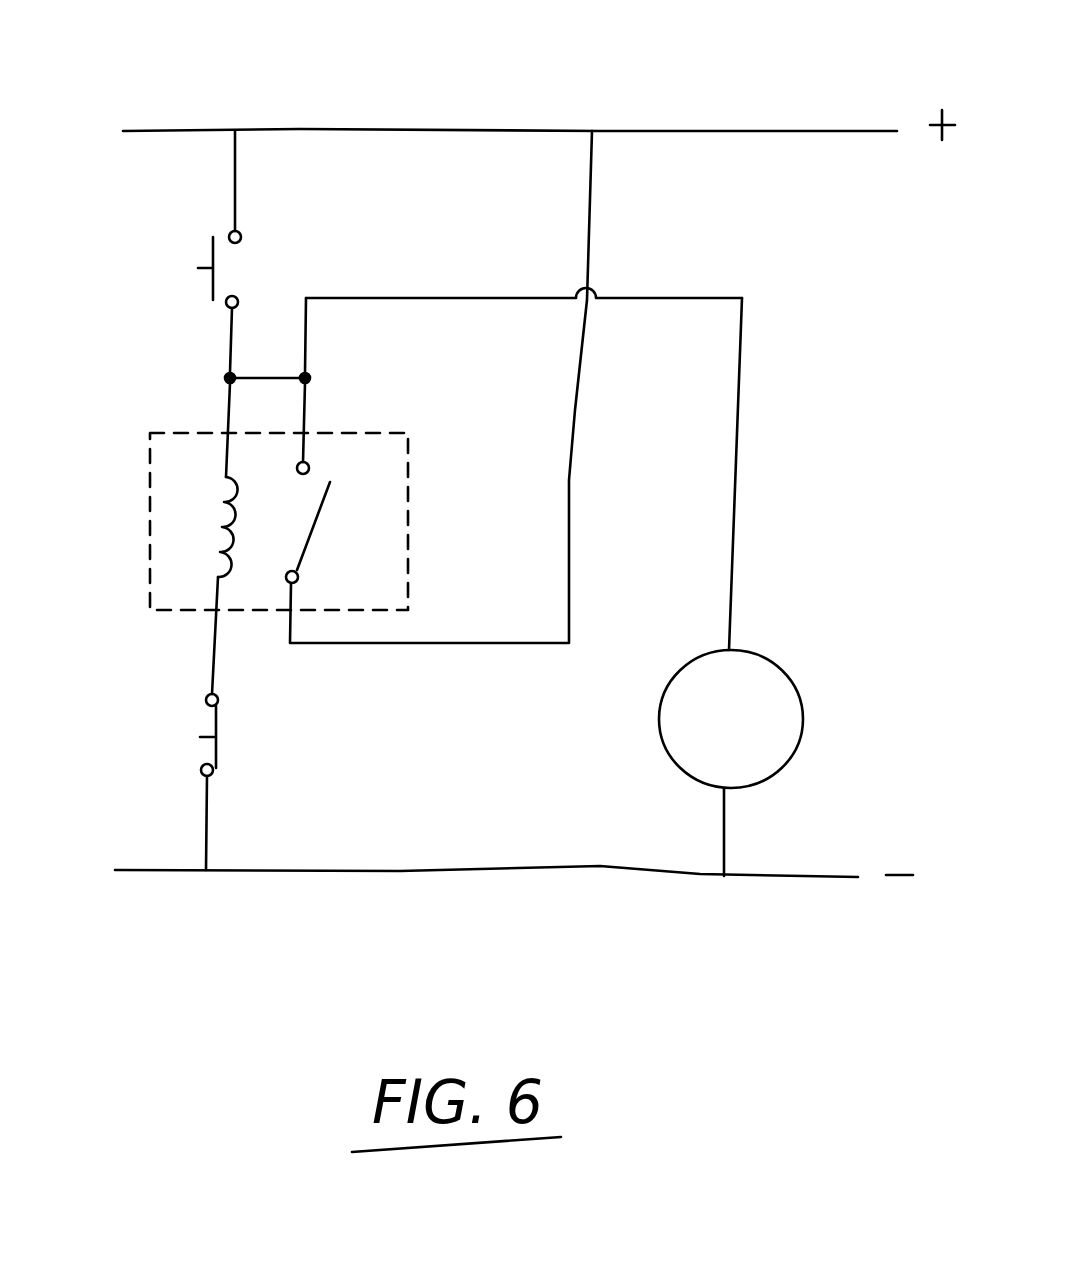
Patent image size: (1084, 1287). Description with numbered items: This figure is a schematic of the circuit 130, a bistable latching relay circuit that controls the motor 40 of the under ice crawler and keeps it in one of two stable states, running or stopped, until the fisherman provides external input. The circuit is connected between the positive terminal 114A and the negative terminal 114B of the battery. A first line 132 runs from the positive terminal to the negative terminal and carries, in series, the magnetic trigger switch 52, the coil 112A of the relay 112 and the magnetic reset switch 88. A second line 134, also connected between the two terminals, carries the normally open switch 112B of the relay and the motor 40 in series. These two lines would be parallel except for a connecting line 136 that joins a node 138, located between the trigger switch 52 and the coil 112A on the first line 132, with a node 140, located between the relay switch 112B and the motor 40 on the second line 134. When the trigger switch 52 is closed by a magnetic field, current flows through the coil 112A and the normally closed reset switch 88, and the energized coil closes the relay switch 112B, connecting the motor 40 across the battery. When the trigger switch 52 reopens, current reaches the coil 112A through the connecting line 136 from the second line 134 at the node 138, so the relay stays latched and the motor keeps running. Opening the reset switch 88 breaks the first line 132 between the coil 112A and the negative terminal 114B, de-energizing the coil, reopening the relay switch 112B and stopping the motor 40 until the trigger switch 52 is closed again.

The positive terminal 114A is at (518, 128).
The negative terminal 114B is at (615, 874).
The magnetic trigger switch 52 is at (208, 248).
The node 138 is at (226, 378).
The first line 132 is at (222, 408).
The connecting line 136 is at (261, 373).
The node 140 is at (308, 378).
The relay 112 is at (385, 462).
The coil 112A is at (215, 518).
The normally open switch 112B is at (325, 518).
The second line 134 is at (745, 440).
The motor 40 is at (773, 698).
The magnetic reset switch 88 is at (218, 740).
The circuit 130 is at (838, 1012).